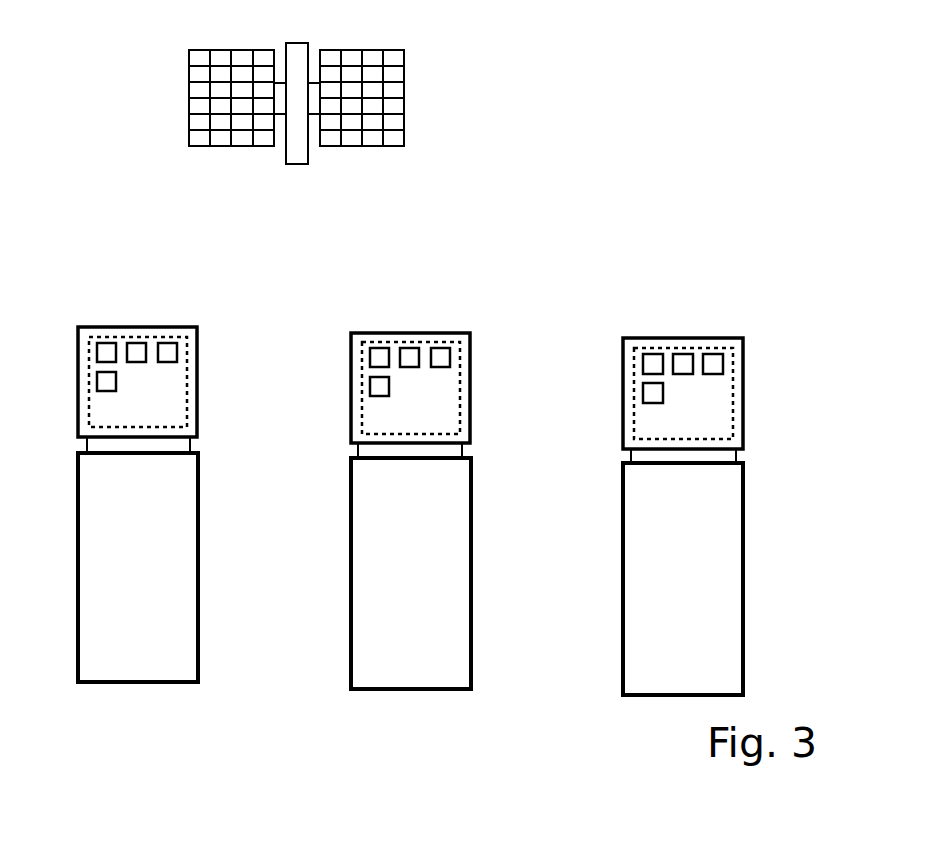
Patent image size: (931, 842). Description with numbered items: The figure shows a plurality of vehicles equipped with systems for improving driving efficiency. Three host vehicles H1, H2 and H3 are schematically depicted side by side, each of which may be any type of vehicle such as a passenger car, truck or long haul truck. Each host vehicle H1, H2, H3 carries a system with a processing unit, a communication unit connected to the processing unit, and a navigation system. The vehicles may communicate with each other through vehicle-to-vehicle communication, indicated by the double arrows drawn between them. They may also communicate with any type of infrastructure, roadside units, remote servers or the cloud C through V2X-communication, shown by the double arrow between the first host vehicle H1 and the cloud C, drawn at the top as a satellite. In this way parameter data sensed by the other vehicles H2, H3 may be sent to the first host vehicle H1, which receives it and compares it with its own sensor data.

The cloud C is at (156, 85).
The V2X-communication V2X is at (239, 194).
The first host vehicle H1 is at (205, 532).
The second host vehicle H2 is at (477, 537).
The third host vehicle H3 is at (750, 543).